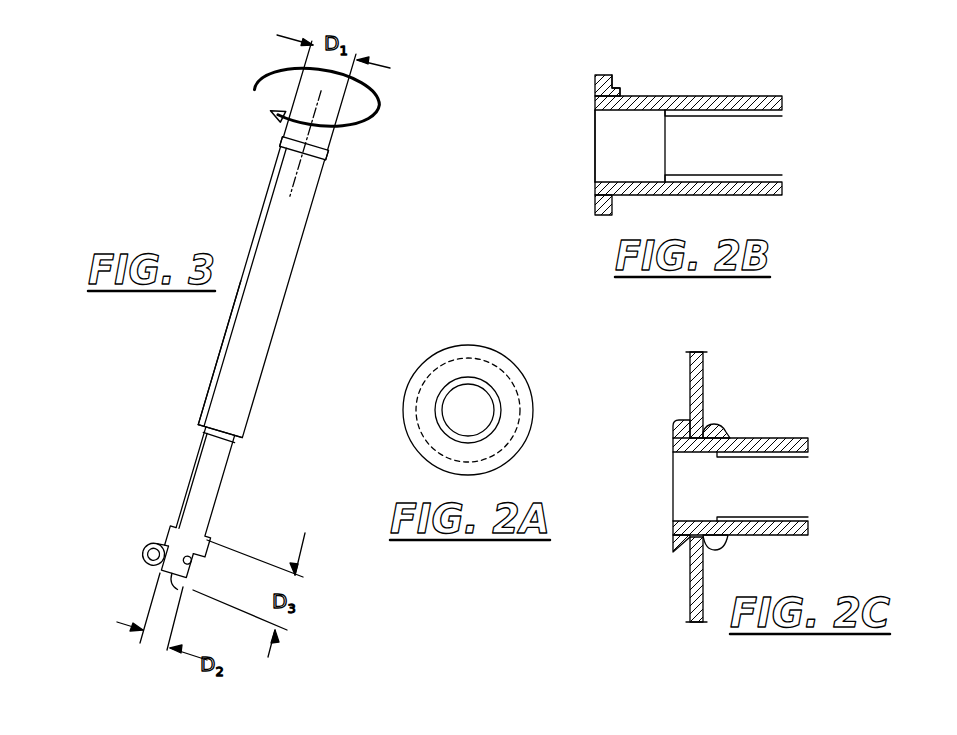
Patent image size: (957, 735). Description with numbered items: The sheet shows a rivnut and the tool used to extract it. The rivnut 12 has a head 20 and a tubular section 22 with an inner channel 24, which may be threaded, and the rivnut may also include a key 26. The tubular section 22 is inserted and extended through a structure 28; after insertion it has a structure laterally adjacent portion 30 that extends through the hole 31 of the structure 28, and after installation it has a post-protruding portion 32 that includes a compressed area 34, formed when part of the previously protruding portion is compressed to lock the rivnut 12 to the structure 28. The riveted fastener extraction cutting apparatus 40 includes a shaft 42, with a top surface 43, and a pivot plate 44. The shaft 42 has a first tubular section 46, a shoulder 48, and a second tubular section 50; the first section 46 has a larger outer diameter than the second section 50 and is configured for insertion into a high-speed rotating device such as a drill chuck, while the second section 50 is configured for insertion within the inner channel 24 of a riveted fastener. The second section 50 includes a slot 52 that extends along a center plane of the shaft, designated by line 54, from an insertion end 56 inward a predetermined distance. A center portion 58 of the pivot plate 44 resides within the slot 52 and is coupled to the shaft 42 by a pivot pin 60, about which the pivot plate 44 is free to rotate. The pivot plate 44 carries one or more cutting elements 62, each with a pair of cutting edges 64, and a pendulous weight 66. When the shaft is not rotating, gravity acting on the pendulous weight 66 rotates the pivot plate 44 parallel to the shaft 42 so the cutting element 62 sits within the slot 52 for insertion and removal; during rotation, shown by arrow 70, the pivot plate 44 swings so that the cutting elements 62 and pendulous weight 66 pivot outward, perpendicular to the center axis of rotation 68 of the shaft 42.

In FIG. 2C, the rivnut 12 is at (808, 527).
In FIG. 2B, the head 20 is at (600, 73).
In FIG. 2B, the tubular section 22 is at (693, 96).
In FIG. 2B, the inner channel 24 is at (608, 123).
In FIG. 2B, the key 26 is at (616, 87).
In FIG. 2C, the structure 28 is at (690, 588).
In FIG. 2C, the structure laterally adjacent portion 30 is at (700, 412).
In FIG. 2C, the hole 31 is at (685, 540).
In FIG. 2C, the post-protruding portion 32 is at (737, 432).
In FIG. 2C, the compressed area 34 is at (718, 546).
In FIG. 3, the riveted fastener extraction cutting apparatus 40 is at (333, 153).
In FIG. 3, the shaft 42 is at (298, 253).
In FIG. 3, the top surface 43 is at (285, 137).
In FIG. 3, the pivot plate 44 is at (158, 545).
In FIG. 3, the first tubular section 46 is at (262, 325).
In FIG. 3, the shoulder 48 is at (240, 441).
In FIG. 3, the second tubular section 50 is at (200, 453).
In FIG. 3, the slot 52 is at (173, 538).
In FIG. 3, the center plane line 54 is at (214, 372).
In FIG. 3, the insertion end 56 is at (190, 590).
In FIG. 3, the center portion 58 is at (168, 531).
In FIG. 3, the pivot pin 60 is at (210, 548).
In FIG. 3, the cutting element 62 is at (150, 562).
In FIG. 3, the cutting edges 64 is at (167, 537).
In FIG. 3, the pendulous weight 66 is at (150, 553).
In FIG. 3, the center axis of rotation 68 is at (330, 134).
In FIG. 3, the arrow 70 is at (258, 76).